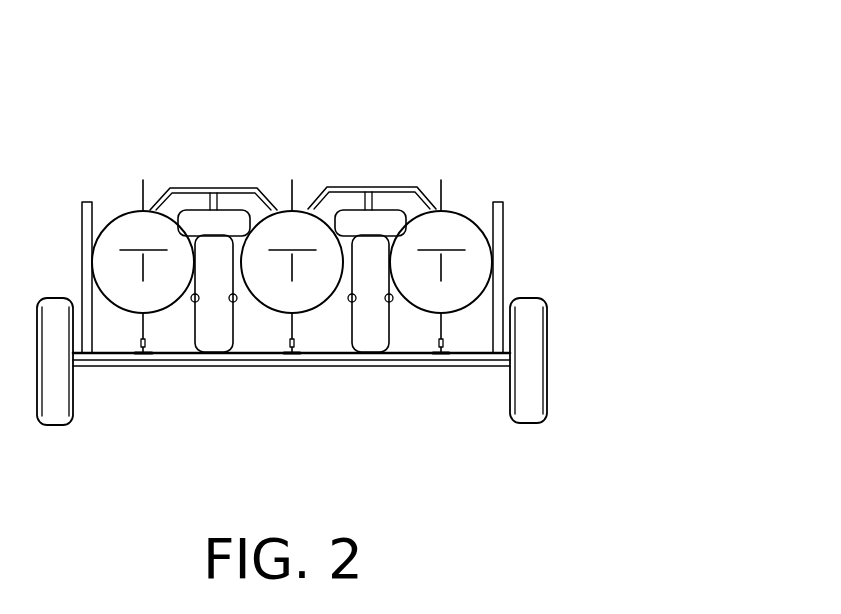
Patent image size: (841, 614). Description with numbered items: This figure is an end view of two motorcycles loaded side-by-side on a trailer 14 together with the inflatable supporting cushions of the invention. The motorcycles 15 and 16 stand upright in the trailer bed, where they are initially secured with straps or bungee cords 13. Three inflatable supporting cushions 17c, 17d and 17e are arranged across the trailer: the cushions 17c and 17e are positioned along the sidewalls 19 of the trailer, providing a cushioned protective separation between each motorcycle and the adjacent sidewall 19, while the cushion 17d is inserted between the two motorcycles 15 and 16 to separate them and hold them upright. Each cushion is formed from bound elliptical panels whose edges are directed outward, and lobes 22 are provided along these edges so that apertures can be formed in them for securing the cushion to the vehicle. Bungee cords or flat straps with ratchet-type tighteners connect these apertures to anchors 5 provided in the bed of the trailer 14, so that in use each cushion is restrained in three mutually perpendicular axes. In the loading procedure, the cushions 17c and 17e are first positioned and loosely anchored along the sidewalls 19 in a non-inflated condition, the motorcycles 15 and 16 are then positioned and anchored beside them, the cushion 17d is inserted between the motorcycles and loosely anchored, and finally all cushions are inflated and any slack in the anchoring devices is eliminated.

The trailer 14 is at (607, 88).
The motorcycle 15 is at (252, 160).
The motorcycle 16 is at (397, 158).
The inflatable supporting cushion 17c is at (143, 262).
The inflatable supporting cushion 17d is at (292, 262).
The inflatable supporting cushion 17e is at (441, 262).
The sidewall 19 is at (82, 231).
The lobe 22 is at (143, 202).
The strap 13 is at (294, 343).
The anchor 5 is at (145, 367).